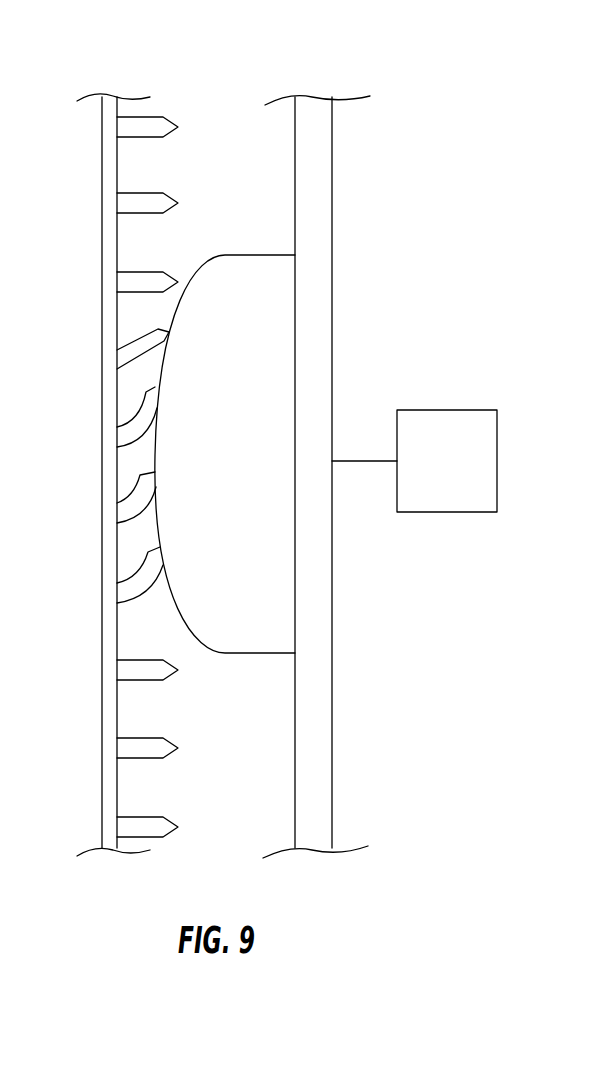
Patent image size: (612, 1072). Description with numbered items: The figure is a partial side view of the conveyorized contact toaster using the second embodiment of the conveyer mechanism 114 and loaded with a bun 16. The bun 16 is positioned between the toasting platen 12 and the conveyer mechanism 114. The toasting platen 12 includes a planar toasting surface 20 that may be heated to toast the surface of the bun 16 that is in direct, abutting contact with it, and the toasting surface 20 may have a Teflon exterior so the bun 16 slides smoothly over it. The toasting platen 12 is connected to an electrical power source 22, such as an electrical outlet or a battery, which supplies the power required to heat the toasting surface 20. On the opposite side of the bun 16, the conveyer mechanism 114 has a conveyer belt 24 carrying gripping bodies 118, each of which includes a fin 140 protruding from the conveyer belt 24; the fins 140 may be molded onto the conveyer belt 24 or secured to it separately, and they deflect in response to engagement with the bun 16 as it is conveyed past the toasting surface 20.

The conveyer mechanism 114 is at (180, 76).
The toasting platen 12 is at (410, 98).
The toasting surface 20 is at (295, 205).
The bun 16 is at (252, 278).
The electrical power source 22 is at (452, 410).
The conveyer belt 24 is at (98, 477).
The gripping body 118 is at (166, 670).
The fin 140 is at (166, 745).